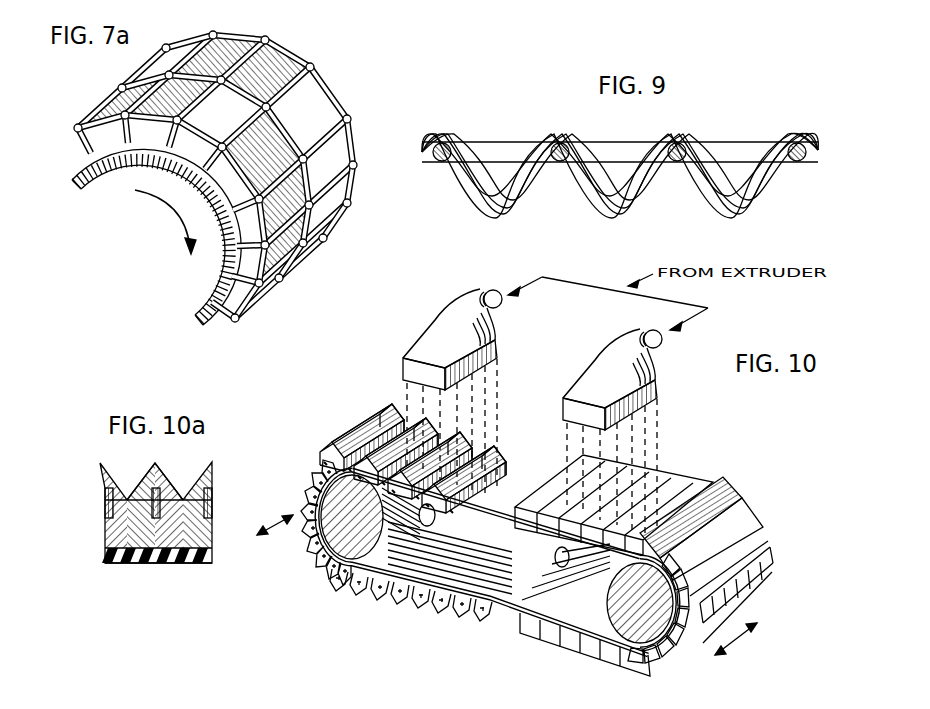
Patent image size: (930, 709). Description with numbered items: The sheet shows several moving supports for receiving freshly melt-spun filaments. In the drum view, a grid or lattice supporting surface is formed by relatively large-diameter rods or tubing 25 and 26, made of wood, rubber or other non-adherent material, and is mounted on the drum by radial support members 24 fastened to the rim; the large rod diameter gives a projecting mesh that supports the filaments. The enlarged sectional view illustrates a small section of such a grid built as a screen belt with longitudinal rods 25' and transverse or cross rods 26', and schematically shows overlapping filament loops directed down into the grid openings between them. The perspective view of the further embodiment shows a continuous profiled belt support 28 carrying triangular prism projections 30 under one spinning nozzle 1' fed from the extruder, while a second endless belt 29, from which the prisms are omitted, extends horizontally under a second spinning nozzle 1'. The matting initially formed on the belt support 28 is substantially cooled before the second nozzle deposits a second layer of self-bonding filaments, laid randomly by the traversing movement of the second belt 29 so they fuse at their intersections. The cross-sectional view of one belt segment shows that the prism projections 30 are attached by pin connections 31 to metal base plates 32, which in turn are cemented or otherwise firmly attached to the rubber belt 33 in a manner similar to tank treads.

In FIG. 7A, the radial support members 24 is at (82, 150).
In FIG. 7A, the rods or tubing 25 is at (227, 176).
In FIG. 7A, the rods or tubing 26 is at (235, 176).
In FIG. 9, the longitudinal rods 25' is at (620, 151).
In FIG. 9, the transverse or cross rods 26' is at (620, 179).
In FIG. 10, the spinning nozzle 1' is at (532, 412).
In FIG. 10, the profiled belt support 28 is at (340, 417).
In FIG. 10, the second endless belt 29 is at (752, 486).
In FIG. 10, the prism projections 30 is at (326, 462).
In FIG. 10A, the prism projections 30 is at (137, 497).
In FIG. 10A, the pin connections 31 is at (167, 500).
In FIG. 10, the metal base plates 32 is at (385, 577).
In FIG. 10A, the metal base plates 32 is at (137, 523).
In FIG. 10, the rubber belt 33 is at (437, 572).
In FIG. 10A, the rubber belt 33 is at (130, 560).